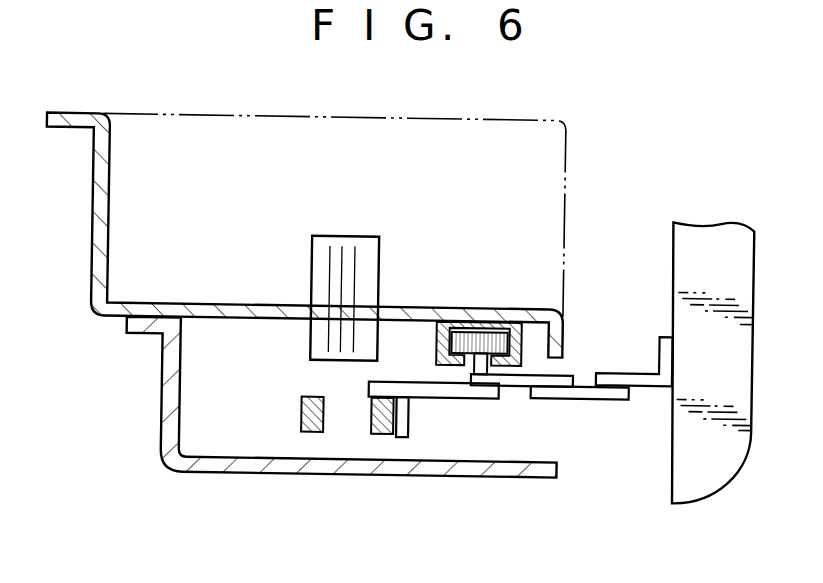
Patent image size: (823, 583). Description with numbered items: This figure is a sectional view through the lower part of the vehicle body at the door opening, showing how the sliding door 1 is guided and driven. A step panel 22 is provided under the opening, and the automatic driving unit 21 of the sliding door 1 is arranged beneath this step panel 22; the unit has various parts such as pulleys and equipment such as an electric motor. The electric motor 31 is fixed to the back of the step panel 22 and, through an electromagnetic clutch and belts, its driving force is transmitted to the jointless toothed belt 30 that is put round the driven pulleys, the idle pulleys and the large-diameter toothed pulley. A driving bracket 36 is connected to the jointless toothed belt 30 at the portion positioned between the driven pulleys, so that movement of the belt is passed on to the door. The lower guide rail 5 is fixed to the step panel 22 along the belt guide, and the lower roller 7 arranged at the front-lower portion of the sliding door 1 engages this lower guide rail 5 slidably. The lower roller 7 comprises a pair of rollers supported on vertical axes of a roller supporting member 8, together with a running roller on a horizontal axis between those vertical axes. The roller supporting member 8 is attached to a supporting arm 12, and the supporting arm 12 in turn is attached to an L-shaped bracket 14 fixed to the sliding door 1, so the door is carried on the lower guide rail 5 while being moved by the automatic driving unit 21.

The sliding door 1 is at (737, 289).
The lower guide rail 5 is at (515, 320).
The lower roller 7 is at (474, 336).
The roller supporting member 8 is at (540, 381).
The supporting arm 12 is at (585, 386).
The L-shaped bracket 14 is at (633, 370).
The automatic driving unit 21 is at (228, 416).
The step panel 22 is at (192, 311).
The jointless toothed belt 30 is at (382, 432).
The electric motor 31 is at (337, 247).
The driving bracket 36 is at (444, 388).